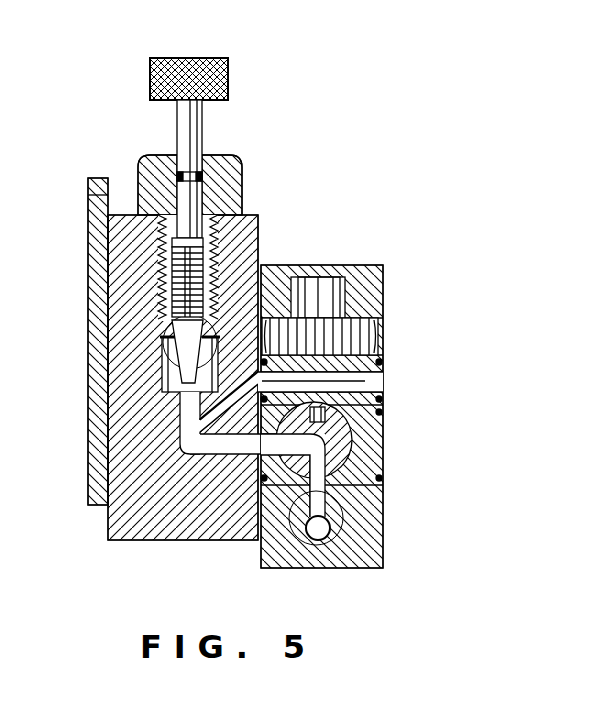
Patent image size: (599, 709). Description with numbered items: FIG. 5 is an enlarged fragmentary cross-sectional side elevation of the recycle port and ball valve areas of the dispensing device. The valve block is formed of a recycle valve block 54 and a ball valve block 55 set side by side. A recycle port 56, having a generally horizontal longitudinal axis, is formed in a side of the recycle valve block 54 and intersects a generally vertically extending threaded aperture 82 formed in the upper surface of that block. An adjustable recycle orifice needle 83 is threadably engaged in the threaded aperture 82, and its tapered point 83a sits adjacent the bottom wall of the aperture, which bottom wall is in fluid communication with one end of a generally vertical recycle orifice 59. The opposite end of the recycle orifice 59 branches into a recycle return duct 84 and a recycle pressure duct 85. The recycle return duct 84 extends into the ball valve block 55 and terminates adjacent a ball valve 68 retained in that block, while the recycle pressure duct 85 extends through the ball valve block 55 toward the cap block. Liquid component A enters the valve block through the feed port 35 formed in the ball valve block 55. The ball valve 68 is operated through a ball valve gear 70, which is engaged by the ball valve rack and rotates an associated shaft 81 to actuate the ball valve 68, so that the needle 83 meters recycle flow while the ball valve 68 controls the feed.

The recycle valve block 54 is at (150, 540).
The ball valve block 55 is at (383, 556).
The recycle port 56 is at (168, 352).
The recycle orifice 59 is at (180, 432).
The ball valve 68 is at (343, 428).
The ball valve gear 70 is at (383, 325).
The shaft 81 is at (332, 300).
The threaded aperture 82 is at (214, 250).
The adjustable recycle orifice needle 83 is at (230, 72).
The tapered point 83a is at (182, 384).
The recycle return duct 84 is at (235, 452).
The recycle pressure duct 85 is at (383, 378).
The feed port 35 is at (312, 540).